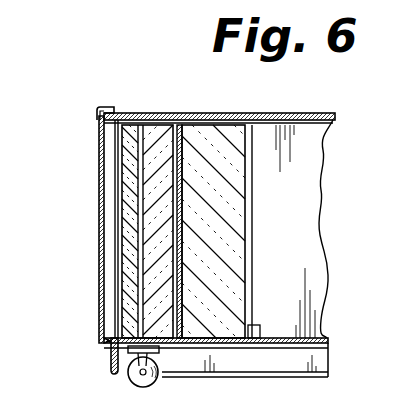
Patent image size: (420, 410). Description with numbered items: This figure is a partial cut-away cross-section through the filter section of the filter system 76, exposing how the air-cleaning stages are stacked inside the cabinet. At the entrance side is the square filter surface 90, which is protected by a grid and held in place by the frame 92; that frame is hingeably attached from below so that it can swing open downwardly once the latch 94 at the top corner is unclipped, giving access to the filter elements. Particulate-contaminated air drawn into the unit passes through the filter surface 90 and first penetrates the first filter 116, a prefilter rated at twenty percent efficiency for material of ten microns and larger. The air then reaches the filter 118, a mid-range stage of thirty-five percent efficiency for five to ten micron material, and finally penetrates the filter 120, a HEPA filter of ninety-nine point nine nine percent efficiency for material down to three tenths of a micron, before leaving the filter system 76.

The filter system 76 is at (297, 191).
The filter surface 90 is at (103, 234).
The frame 92 is at (104, 341).
The latch 94 is at (97, 116).
The first filter 116 is at (156, 133).
The filter 118 is at (120, 160).
The filter 120 is at (208, 162).